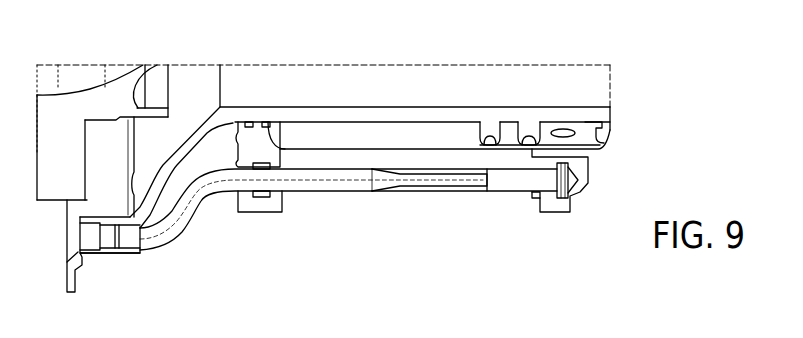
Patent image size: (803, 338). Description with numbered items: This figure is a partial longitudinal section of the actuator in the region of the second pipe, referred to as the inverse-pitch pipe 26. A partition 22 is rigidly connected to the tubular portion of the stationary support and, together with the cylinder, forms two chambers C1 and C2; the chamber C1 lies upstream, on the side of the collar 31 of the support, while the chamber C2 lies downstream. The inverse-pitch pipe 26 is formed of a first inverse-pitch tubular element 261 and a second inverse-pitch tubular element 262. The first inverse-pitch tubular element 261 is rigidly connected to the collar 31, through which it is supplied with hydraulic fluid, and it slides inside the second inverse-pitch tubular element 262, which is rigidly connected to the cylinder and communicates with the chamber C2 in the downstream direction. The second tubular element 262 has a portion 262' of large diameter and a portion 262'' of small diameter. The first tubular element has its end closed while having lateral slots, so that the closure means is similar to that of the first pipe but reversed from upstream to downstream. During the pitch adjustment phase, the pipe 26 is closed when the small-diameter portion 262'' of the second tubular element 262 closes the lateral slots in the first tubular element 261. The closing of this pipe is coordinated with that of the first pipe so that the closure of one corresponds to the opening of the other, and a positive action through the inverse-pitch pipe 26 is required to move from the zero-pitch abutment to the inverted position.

The partition 22 is at (507, 135).
The chamber C1 is at (403, 138).
The chamber C2 is at (592, 139).
The inverse-pitch pipe 26 is at (310, 215).
The first inverse-pitch tubular element 261 is at (195, 200).
The second inverse-pitch tubular element 262 is at (464, 215).
The large-diameter portion 262' is at (423, 220).
The small-diameter portion 262'' is at (557, 209).
The collar 31 is at (117, 247).